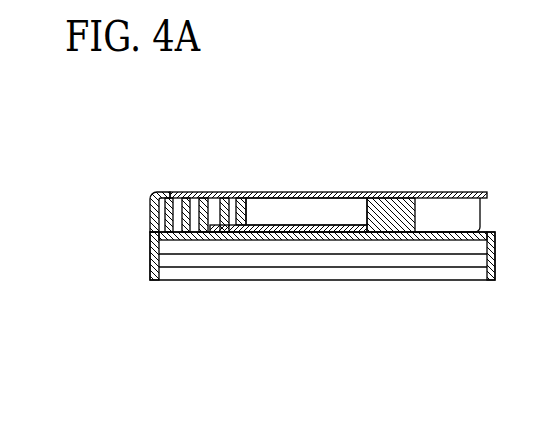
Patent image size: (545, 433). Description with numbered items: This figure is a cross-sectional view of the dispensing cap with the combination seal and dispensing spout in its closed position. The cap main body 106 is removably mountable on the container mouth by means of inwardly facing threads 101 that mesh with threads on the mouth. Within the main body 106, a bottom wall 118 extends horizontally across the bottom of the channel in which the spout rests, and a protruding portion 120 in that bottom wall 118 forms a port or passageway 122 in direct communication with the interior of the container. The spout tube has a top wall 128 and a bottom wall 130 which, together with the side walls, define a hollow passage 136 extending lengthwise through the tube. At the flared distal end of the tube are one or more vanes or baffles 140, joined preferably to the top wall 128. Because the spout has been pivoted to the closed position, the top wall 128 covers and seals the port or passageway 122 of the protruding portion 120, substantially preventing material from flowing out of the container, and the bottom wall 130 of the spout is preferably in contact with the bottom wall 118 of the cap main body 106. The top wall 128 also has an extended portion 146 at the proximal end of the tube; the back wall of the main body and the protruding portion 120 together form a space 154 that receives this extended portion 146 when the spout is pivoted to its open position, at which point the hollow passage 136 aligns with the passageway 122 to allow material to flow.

The threads 101 is at (432, 268).
The main body 106 is at (150, 238).
The bottom wall 118 is at (297, 240).
The protruding portion 120 is at (233, 222).
The port or passageway 122 is at (213, 222).
The top wall 128 is at (457, 192).
The bottom wall 130 is at (247, 228).
The hollow passage 136 is at (322, 212).
The vanes or baffles 140 is at (393, 194).
The extended portion 146 is at (168, 195).
The space 154 is at (153, 192).